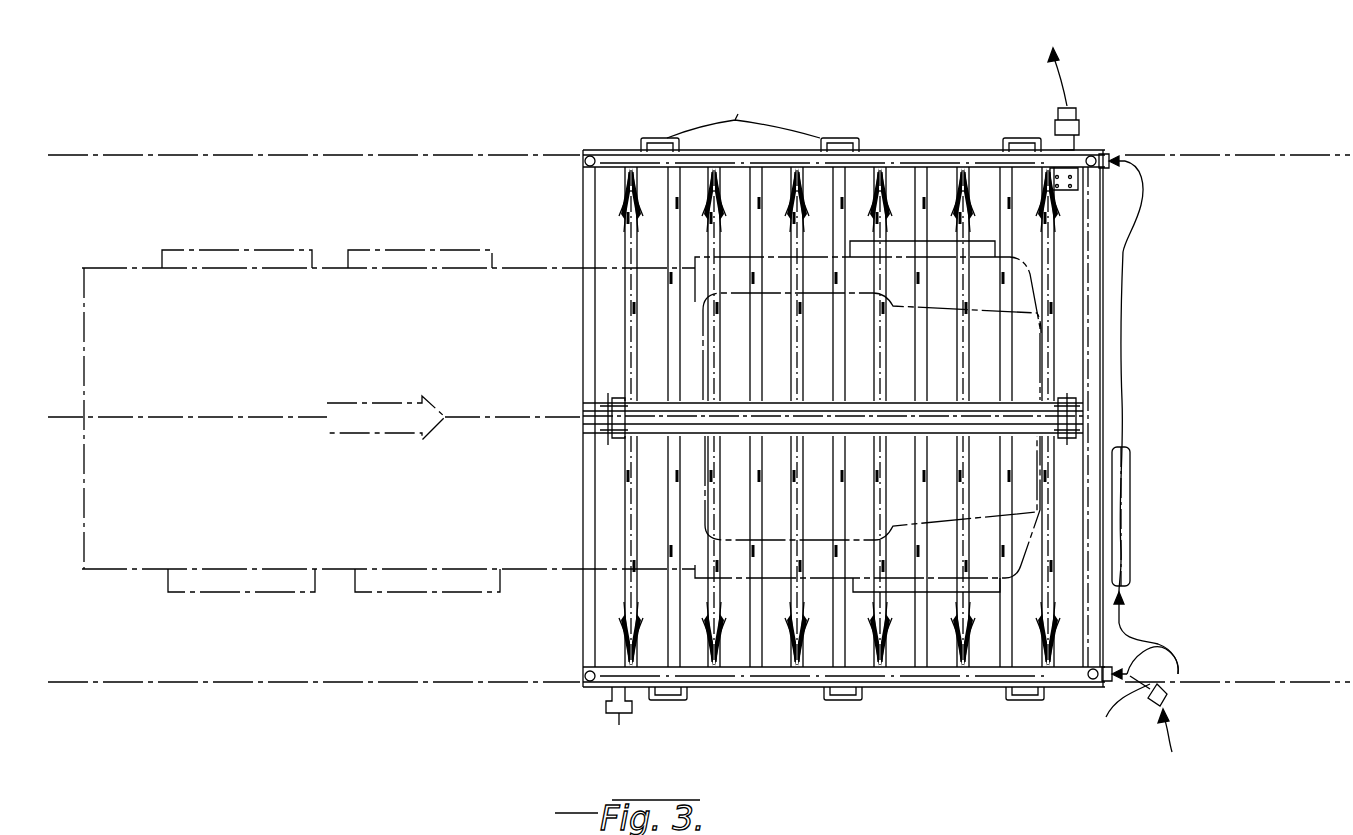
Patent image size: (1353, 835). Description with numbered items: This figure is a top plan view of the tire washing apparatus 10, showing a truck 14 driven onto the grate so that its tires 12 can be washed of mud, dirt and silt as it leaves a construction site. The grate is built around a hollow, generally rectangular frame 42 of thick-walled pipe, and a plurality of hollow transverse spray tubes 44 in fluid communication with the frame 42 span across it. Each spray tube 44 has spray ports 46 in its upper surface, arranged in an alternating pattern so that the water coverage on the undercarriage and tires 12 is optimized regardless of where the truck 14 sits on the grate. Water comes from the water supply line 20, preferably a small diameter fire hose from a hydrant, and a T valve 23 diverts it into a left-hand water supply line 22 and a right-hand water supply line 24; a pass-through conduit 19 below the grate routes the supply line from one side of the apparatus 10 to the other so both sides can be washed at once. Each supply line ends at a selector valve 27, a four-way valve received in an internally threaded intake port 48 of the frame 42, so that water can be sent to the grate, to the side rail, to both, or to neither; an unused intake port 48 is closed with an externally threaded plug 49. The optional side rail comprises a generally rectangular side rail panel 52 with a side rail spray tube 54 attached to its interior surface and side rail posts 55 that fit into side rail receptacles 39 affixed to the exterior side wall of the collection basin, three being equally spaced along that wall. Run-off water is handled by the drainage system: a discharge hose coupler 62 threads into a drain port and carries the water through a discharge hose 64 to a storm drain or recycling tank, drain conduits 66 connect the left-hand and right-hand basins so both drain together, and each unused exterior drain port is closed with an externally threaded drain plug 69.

The apparatus 10 is at (506, 122).
The tires 12 is at (194, 250).
The truck 14 is at (198, 364).
The pass-through conduit 19 is at (1130, 482).
The water supply line 20 is at (1173, 745).
The left-hand water supply line 22 is at (1125, 254).
The T valve 23 is at (1166, 698).
The right-hand water supply line 24 is at (1123, 714).
The selector valve 27 is at (1112, 160).
The side rail receptacles 39 is at (653, 138).
The frame 42 is at (590, 218).
The spray tubes 44 is at (675, 318).
The spray ports 46 is at (675, 376).
The intake port 48 is at (1097, 153).
The plug 49 is at (587, 152).
The side rail panel 52 is at (621, 150).
The side rail spray tube 54 is at (890, 175).
The side rail posts 55 is at (655, 730).
The discharge hose coupler 62 is at (1056, 130).
The discharge hose 64 is at (1058, 78).
The drain conduits 66 is at (580, 436).
The drain plug 69 is at (612, 708).